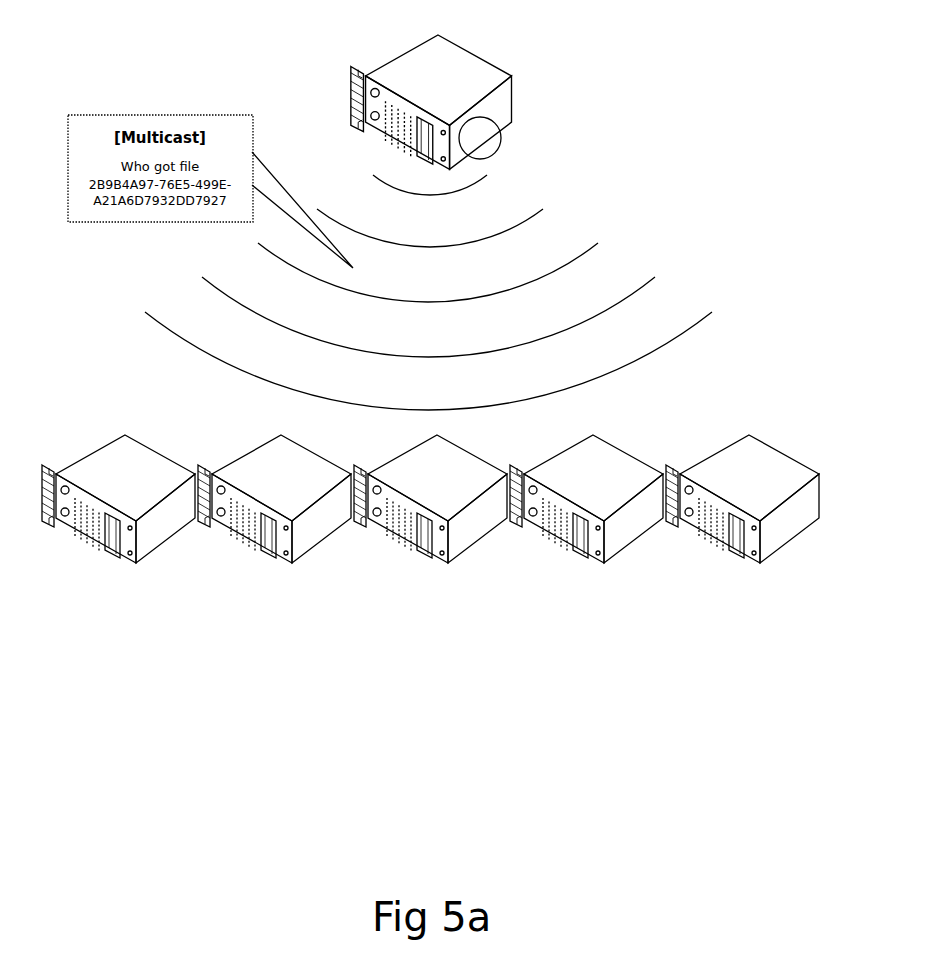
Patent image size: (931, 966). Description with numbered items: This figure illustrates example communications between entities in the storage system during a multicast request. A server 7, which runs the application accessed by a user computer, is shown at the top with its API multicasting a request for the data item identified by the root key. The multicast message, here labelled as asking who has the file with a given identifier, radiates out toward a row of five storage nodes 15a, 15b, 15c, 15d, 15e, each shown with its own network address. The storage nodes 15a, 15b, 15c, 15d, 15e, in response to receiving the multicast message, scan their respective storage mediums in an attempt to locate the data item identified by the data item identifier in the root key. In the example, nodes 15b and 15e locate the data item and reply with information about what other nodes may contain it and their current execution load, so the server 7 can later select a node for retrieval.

The server 7 is at (483, 84).
The storage node 15a is at (107, 605).
The storage node 15b is at (263, 605).
The storage node 15c is at (437, 605).
The storage node 15d is at (582, 605).
The storage node 15e is at (745, 605).